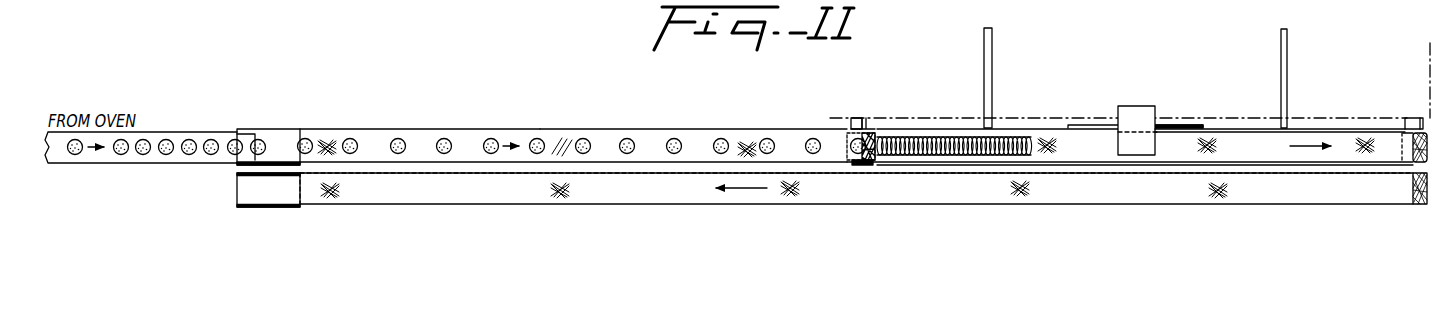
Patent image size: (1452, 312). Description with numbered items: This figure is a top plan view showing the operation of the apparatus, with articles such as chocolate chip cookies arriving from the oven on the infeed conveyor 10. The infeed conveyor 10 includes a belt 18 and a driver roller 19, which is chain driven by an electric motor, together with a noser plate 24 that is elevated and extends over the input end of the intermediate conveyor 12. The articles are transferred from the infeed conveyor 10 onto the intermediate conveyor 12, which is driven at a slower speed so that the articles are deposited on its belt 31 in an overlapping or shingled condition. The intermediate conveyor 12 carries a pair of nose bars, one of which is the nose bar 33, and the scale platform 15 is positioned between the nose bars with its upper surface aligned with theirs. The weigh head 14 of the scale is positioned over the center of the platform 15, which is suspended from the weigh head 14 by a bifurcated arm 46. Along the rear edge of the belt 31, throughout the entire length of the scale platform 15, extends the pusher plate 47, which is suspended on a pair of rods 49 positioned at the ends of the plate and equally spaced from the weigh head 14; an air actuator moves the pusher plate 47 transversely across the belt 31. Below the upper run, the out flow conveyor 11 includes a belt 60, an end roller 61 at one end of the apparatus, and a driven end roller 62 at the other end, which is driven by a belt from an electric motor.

The infeed conveyor 10 is at (591, 122).
The out flow conveyor 11 is at (1279, 204).
The intermediate conveyor 12 is at (1309, 132).
The weigh head 14 is at (1150, 96).
The platform 15 is at (1203, 162).
The belt 18 is at (376, 139).
The driver roller 19 is at (250, 130).
The noser plate 24 is at (856, 126).
The belt 31 is at (1085, 151).
The nose bar 33 is at (1413, 118).
The bifurcated arm 46 is at (1083, 124).
The pusher plate 47 is at (1218, 141).
The rods 49 is at (993, 46).
The belt 60 is at (873, 192).
The end roller 61 is at (1420, 206).
The driven end roller 62 is at (252, 208).